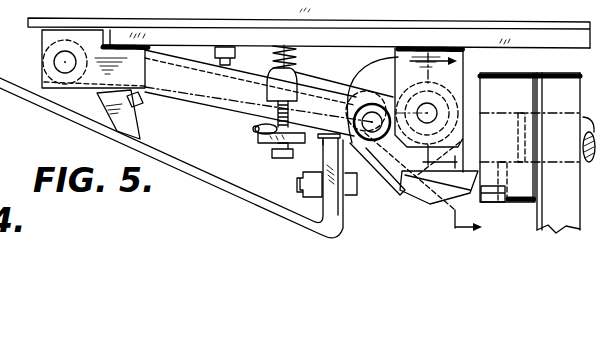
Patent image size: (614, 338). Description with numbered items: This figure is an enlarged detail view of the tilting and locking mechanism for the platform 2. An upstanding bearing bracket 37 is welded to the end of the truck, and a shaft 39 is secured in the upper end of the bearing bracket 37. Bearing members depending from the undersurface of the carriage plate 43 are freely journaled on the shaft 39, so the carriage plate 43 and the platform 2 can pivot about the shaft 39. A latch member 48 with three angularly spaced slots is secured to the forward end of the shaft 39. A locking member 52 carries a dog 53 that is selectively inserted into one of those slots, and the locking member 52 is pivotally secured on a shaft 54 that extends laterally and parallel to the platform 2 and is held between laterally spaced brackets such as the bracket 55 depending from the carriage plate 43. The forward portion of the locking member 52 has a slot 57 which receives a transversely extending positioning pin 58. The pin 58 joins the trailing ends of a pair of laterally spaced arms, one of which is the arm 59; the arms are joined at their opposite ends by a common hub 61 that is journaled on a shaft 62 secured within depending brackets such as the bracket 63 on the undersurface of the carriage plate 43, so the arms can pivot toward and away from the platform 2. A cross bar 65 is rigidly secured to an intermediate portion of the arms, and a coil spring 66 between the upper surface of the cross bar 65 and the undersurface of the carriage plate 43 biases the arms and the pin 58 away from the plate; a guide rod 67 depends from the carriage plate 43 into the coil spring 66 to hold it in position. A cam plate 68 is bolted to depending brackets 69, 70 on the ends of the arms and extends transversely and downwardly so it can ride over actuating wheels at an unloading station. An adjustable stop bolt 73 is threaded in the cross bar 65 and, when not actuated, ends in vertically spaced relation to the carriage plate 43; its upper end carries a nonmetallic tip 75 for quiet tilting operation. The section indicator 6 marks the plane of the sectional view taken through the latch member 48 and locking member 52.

The platform 2 is at (535, 20).
The carriage plate 43 is at (207, 33).
The depending bracket 63 is at (97, 27).
The shaft 62 is at (55, 59).
The hub 61 is at (44, 82).
The cam plate 68 is at (223, 187).
The depending bracket 70 is at (325, 152).
The depending bracket 69 is at (128, 131).
The arm 59 is at (186, 101).
The positioning pin 58 is at (353, 122).
The bracket 55 is at (402, 67).
The guide rod 67 is at (270, 53).
The coil spring 66 is at (297, 57).
The nonmetallic tip 75 is at (297, 82).
The cross bar 65 is at (258, 136).
The adjustable stop bolt 73 is at (282, 157).
The locking member 52 is at (397, 175).
The slot 57 is at (368, 147).
The dog 53 is at (443, 197).
The section line 6- 6 is at (431, 144).
The shaft 54 is at (437, 113).
The latch member 48 is at (520, 198).
The bearing bracket 37 is at (558, 228).
The shaft 39 is at (588, 130).